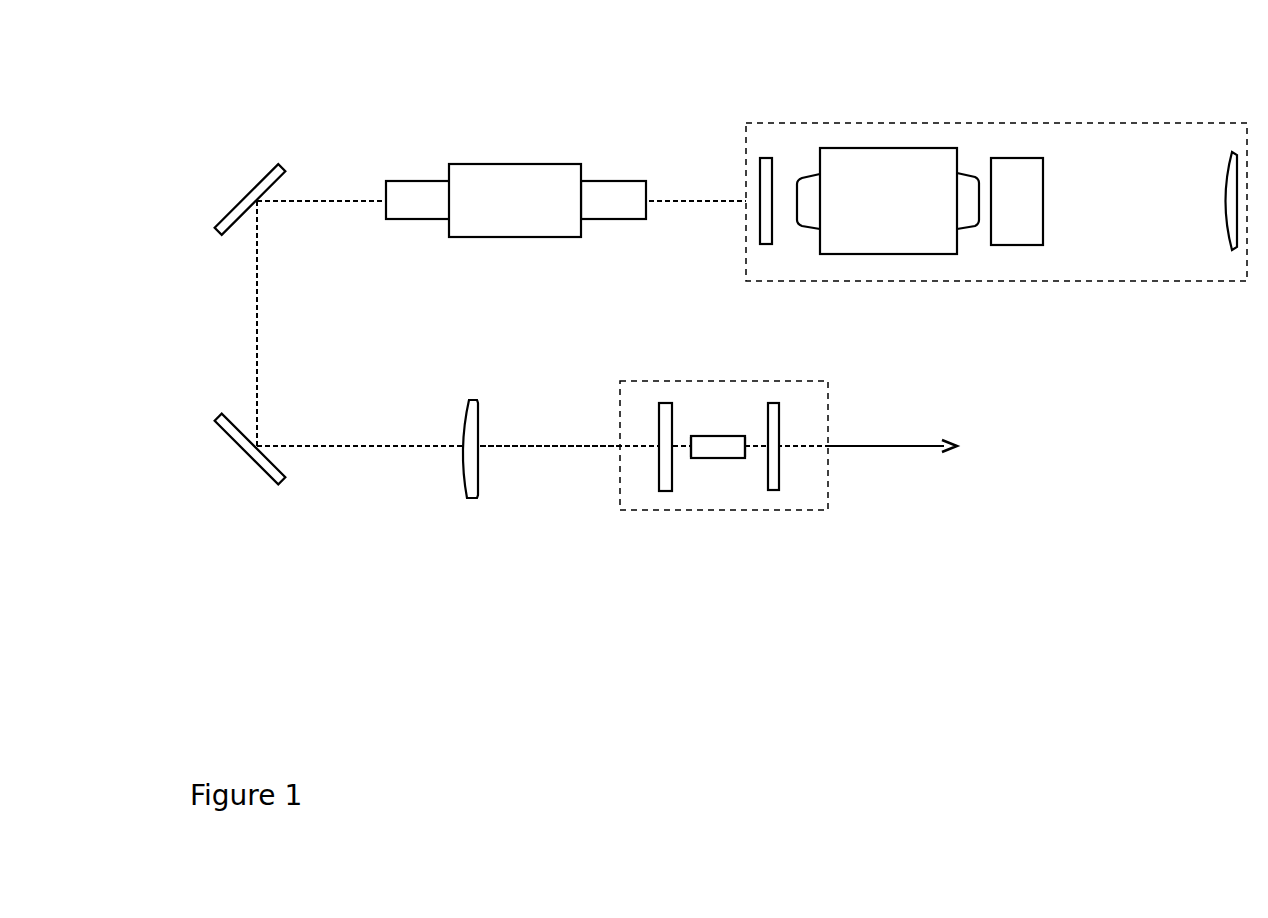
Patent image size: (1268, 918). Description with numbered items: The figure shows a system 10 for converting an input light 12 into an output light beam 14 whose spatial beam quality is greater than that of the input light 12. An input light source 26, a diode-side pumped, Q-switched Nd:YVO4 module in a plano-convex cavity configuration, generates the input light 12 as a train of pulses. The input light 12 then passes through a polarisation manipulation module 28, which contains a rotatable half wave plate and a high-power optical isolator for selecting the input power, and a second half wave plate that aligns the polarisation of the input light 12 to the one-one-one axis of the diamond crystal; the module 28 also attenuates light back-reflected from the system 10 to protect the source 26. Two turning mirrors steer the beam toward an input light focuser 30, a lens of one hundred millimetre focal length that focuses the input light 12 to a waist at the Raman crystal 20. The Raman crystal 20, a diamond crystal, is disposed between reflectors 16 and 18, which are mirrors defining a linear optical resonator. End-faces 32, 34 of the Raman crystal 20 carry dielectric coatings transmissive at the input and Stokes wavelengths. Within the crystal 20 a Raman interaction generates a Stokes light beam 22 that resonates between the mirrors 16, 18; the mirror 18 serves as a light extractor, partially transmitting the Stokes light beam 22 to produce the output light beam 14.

The system 10 is at (716, 512).
The input light 12 is at (497, 447).
The output light beam 14 is at (873, 452).
The reflector 16 is at (658, 482).
The reflector 18 is at (778, 486).
The Raman crystal 20 is at (705, 435).
The Stokes light beam 22 is at (752, 443).
The input light source 26 is at (1072, 282).
The polarisation manipulation module 28 is at (517, 163).
The input light focuser 30 is at (463, 490).
The end-face 32 is at (690, 438).
The end-face 34 is at (745, 452).